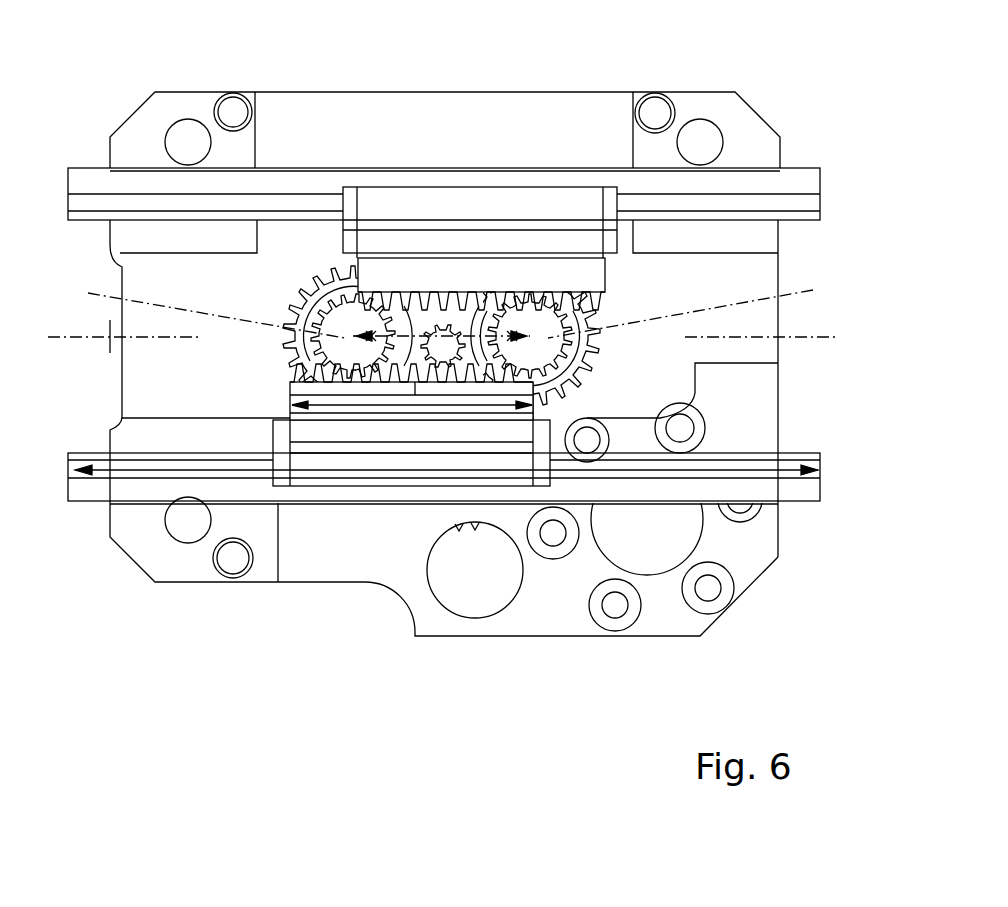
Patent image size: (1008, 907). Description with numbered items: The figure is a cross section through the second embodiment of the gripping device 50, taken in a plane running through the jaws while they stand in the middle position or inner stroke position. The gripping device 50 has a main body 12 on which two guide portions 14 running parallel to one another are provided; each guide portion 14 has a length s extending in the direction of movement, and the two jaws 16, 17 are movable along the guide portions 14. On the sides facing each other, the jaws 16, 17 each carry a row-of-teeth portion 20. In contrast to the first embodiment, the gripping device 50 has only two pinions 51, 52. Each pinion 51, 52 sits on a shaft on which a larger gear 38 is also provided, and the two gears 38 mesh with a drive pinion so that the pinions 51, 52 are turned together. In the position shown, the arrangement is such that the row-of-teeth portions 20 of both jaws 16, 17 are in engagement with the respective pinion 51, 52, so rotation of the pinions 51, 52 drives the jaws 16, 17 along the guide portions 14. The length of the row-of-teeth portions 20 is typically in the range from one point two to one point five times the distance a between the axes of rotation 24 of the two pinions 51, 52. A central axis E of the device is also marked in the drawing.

The main body 12 is at (362, 127).
The guide portion 14 is at (98, 188).
The jaw 16 is at (500, 213).
The jaw 17 is at (360, 460).
The row-of-teeth portion 20 is at (468, 278).
The axis of rotation 24 is at (447, 314).
The gear 38 is at (293, 302).
The gripping device 50 is at (807, 99).
The pinion 51 is at (297, 353).
The pinion 52 is at (577, 322).
The center axis E is at (793, 340).
The distance a is at (441, 325).
The length s is at (412, 437).